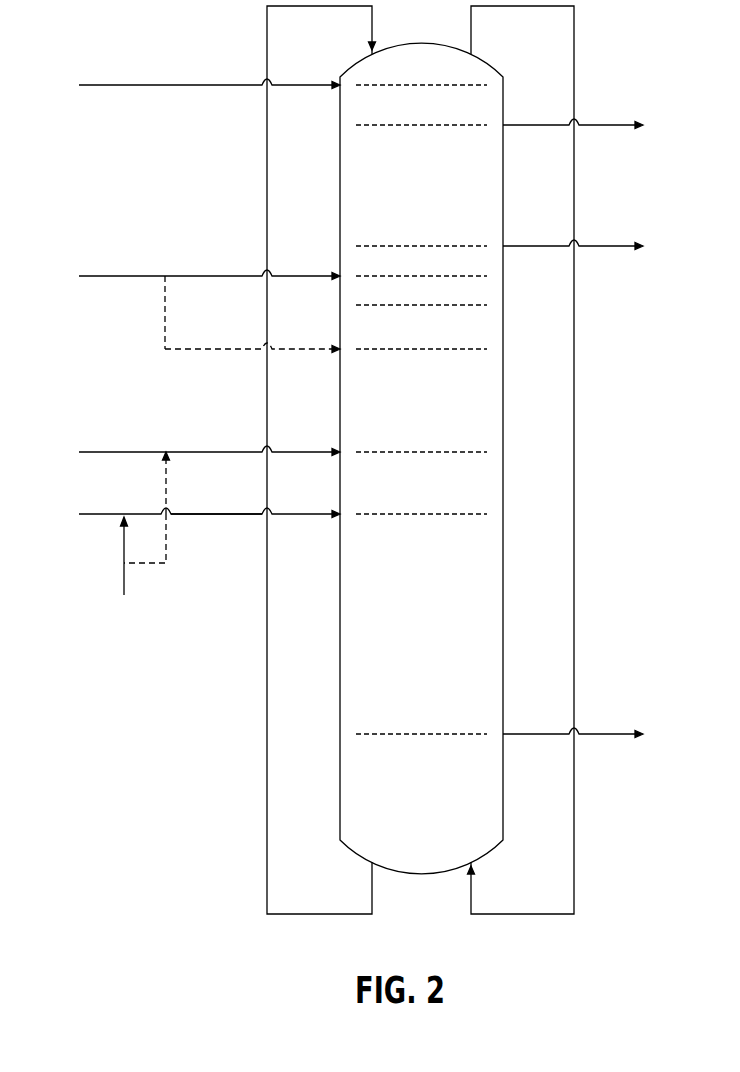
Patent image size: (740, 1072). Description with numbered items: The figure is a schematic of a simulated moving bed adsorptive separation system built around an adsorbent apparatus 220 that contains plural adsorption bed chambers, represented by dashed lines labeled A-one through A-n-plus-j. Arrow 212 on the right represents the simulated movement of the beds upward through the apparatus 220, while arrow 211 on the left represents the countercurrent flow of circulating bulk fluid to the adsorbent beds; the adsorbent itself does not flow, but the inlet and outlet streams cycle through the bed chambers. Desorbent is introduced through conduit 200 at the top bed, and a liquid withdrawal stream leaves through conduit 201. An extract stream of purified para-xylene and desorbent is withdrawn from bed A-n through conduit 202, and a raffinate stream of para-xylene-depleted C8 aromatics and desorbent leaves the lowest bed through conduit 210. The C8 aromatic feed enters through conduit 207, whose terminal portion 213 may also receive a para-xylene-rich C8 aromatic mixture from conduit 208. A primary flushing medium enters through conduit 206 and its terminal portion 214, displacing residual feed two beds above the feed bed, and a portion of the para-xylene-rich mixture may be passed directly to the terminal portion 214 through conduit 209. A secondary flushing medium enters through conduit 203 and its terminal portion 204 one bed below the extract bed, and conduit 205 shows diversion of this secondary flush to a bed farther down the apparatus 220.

The conduit 200 is at (100, 85).
The conduit 201 is at (602, 124).
The conduit 202 is at (602, 245).
The conduit 203 is at (100, 276).
The terminal portion 204 is at (213, 276).
The conduit 205 is at (225, 351).
The conduit 206 is at (100, 452).
The conduit 207 is at (100, 514).
The conduit 208 is at (124, 578).
The conduit 209 is at (147, 565).
The conduit 210 is at (602, 733).
The arrow 211 is at (267, 787).
The arrow 212 is at (575, 830).
The terminal portion 213 is at (245, 513).
The terminal portion 214 is at (230, 451).
The apparatus 220 is at (468, 617).